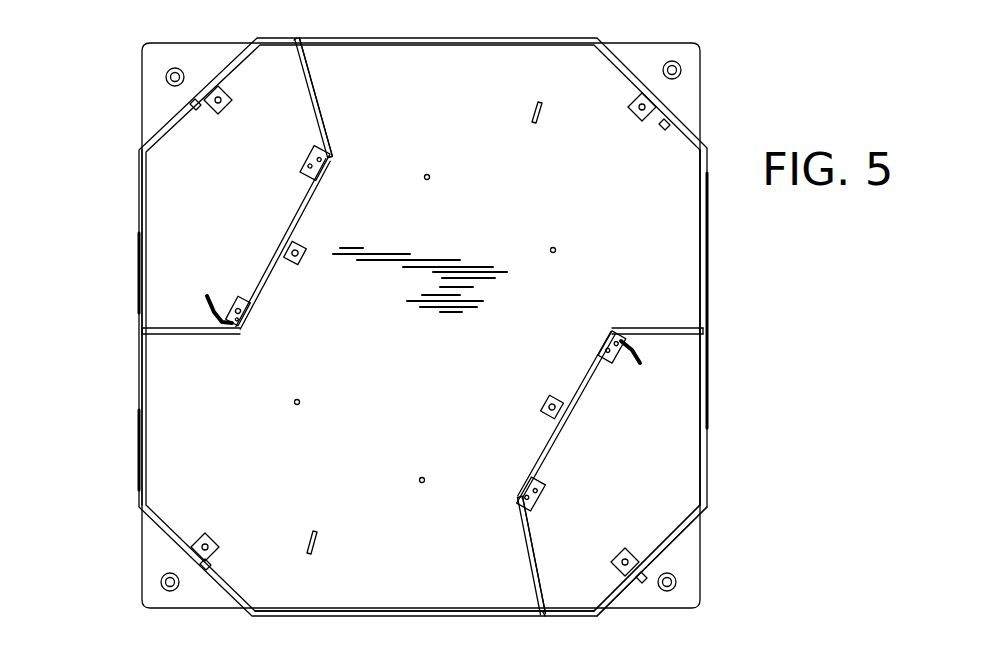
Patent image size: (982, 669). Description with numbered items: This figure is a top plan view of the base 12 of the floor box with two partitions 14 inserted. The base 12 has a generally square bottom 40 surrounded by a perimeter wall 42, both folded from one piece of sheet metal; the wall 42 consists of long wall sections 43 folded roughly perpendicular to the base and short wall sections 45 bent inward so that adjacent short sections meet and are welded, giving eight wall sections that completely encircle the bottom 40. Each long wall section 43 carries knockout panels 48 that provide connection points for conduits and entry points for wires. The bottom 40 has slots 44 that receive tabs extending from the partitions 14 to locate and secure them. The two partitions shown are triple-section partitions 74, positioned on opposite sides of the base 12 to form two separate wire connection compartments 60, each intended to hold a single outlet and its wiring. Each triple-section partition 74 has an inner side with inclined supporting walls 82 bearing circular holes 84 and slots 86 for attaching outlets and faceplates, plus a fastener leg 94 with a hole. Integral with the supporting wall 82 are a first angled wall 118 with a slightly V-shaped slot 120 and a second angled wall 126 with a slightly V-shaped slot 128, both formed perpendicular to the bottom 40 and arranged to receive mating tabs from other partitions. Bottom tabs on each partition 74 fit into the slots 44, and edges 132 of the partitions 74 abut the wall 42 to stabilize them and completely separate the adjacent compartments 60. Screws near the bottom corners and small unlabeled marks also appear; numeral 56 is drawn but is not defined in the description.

The base 12 is at (712, 110).
The partition 14 is at (682, 320).
The bottom 40 is at (188, 476).
The perimeter wall 42 is at (128, 198).
The long wall section 43 is at (450, 38).
The slot 44 is at (540, 120).
The short wall section 45 is at (682, 540).
The knockout panel 48 is at (520, 613).
The mounting hole 56 is at (427, 180).
The wire connection compartment 60 is at (170, 185).
The triple-section partition 74 is at (332, 104).
The inclined supporting wall 82 is at (302, 167).
The circular hole 84 is at (600, 365).
The slot 86 is at (520, 487).
The fastener leg 94 is at (305, 248).
The first angled wall 118 is at (190, 336).
The slot 120 is at (230, 335).
The second angled wall 126 is at (312, 72).
The slot 128 is at (333, 133).
The edge 132 is at (297, 38).